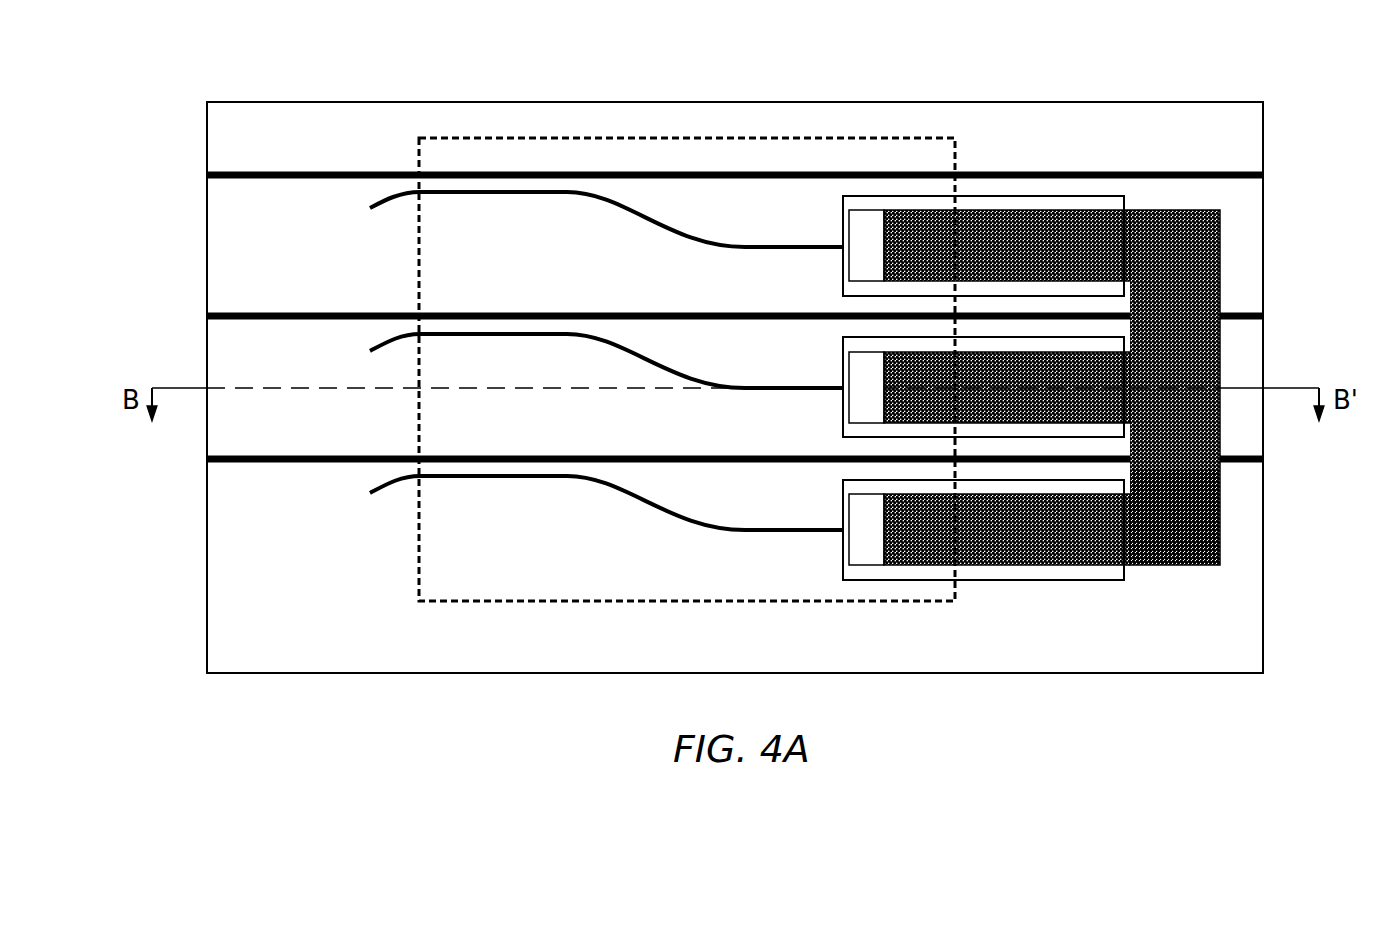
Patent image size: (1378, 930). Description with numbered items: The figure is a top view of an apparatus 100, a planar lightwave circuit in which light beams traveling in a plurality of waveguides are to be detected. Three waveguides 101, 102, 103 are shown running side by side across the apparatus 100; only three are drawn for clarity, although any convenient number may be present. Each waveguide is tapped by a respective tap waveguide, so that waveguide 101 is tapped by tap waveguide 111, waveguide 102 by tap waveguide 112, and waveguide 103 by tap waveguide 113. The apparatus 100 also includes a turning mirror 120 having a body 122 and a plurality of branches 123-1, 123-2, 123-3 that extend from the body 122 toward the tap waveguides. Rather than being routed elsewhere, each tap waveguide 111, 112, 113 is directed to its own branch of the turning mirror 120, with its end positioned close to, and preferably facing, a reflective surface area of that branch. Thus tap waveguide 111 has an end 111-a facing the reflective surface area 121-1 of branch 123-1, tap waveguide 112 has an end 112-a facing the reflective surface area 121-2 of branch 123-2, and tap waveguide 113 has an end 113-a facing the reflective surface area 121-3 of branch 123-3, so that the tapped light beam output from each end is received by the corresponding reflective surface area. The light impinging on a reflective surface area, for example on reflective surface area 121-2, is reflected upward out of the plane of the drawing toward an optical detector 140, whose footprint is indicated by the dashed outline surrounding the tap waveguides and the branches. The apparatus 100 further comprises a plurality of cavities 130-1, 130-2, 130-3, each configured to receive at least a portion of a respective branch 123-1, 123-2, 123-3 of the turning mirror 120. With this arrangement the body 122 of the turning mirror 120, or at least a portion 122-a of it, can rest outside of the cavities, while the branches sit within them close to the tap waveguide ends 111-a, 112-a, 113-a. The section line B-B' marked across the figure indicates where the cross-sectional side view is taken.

The apparatus 100 is at (1108, 61).
The waveguide 101 is at (237, 172).
The waveguide 102 is at (237, 313).
The waveguide 103 is at (238, 462).
The tap waveguide 111 is at (626, 213).
The end of tap waveguide 111-a is at (843, 250).
The tap waveguide 112 is at (608, 354).
The end of tap waveguide 112-a is at (843, 391).
The tap waveguide 113 is at (623, 496).
The end of tap waveguide 113-a is at (843, 533).
The turning mirror 120 is at (1036, 393).
The reflective surface area 121-1 is at (858, 266).
The reflective surface area 121-2 is at (858, 408).
The reflective surface area 121-3 is at (858, 550).
The body 122 is at (1170, 380).
The portion of the body 122-a is at (1170, 532).
The branch 123-1 is at (1040, 222).
The branch 123-2 is at (1112, 404).
The branch 123-3 is at (1040, 552).
The cavity 130-1 is at (843, 222).
The cavity 130-2 is at (843, 364).
The cavity 130-3 is at (843, 508).
The optical detector 140 is at (418, 585).